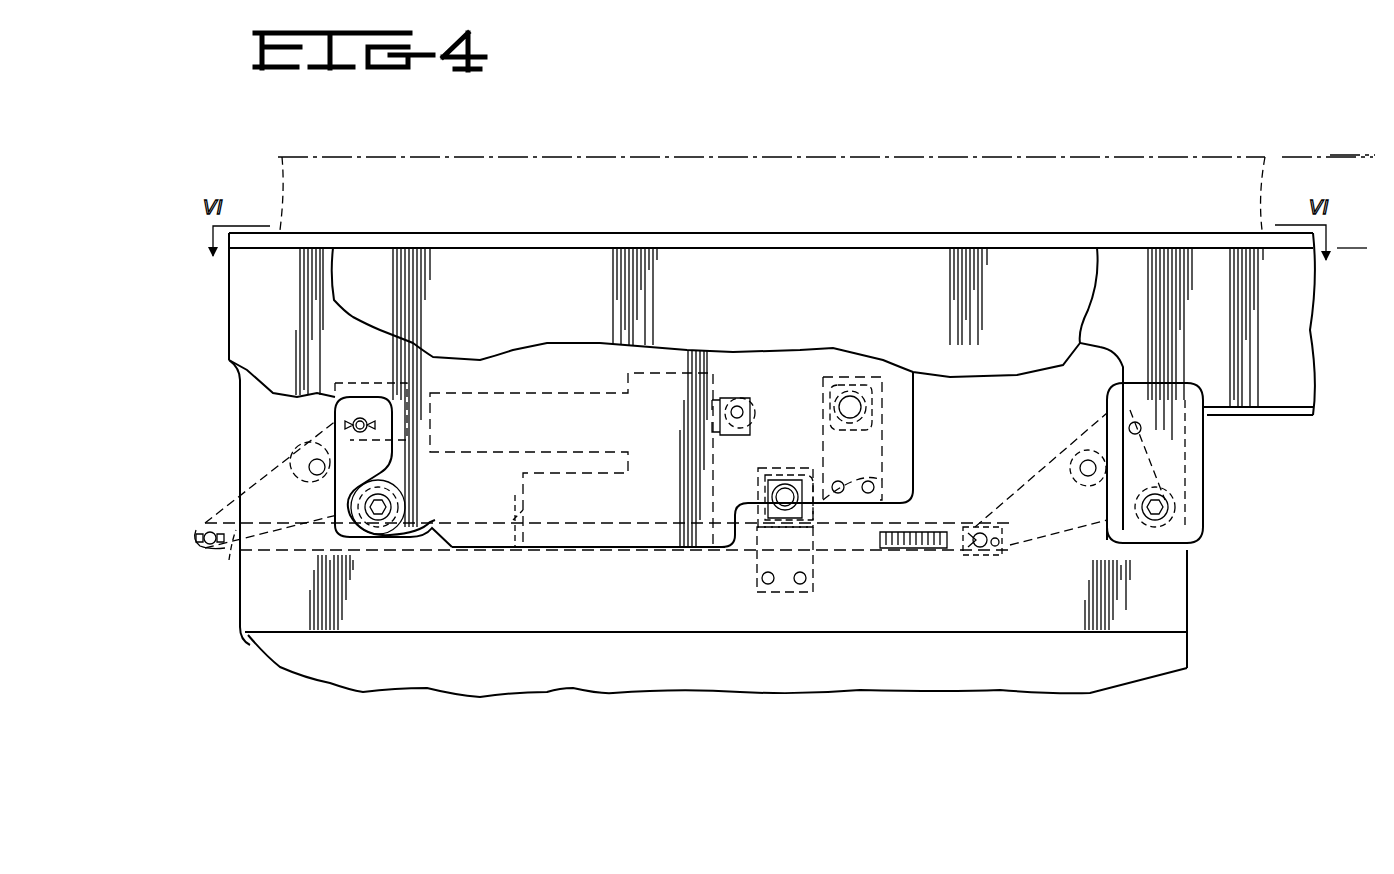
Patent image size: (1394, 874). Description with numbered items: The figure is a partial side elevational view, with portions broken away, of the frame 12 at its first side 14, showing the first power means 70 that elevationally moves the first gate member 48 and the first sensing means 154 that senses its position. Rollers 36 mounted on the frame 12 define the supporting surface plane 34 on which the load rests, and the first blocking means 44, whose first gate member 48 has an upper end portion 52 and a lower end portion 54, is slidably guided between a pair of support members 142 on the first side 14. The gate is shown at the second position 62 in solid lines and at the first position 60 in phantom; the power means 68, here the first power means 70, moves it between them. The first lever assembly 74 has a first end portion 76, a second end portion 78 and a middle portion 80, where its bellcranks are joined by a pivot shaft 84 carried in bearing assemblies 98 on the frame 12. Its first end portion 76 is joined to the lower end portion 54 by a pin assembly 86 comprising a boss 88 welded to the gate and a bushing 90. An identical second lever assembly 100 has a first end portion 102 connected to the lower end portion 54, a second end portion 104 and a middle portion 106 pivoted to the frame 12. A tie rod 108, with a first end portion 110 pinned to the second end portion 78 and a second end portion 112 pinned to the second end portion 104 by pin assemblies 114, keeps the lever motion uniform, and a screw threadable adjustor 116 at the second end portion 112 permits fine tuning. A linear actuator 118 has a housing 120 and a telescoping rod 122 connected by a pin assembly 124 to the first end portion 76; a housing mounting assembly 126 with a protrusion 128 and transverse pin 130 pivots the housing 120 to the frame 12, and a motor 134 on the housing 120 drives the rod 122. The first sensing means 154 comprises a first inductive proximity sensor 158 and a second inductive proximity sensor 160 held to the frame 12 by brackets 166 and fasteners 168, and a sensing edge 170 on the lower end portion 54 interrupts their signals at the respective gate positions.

The frame 12 is at (800, 250).
The first side 14 is at (483, 262).
The supporting surface plane 34 is at (900, 240).
The rollers 36 is at (411, 262).
The first blocking means 44 is at (1170, 245).
The first gate member 48 is at (285, 260).
The upper end portion 52 is at (1133, 258).
The lower end portion 54 is at (430, 530).
The first position 60 is at (1333, 152).
The second position 62 is at (1340, 248).
The power means 68 is at (652, 336).
The first power means 70 is at (678, 352).
The first lever assembly 74 is at (235, 480).
The first end portion 76 is at (415, 480).
The second end portion 78 is at (232, 560).
The middle portion 80 is at (292, 440).
The pivot shaft 84 is at (300, 462).
The pin assembly 86 is at (402, 508).
The boss 88 is at (413, 500).
The bushing 90 is at (380, 520).
The bearing assemblies 98 is at (312, 490).
The second lever assembly 100 is at (1088, 544).
The first end portion 102 is at (1140, 528).
The second end portion 104 is at (1010, 545).
The middle portion 106 is at (1052, 470).
The tie rod 108 is at (640, 553).
The first end portion 110 is at (222, 515).
The second end portion 112 is at (898, 556).
The pin assembly 114 is at (211, 546).
The screw threadable adjustor 116 is at (970, 555).
The linear actuator 118 is at (530, 388).
The housing 120 is at (558, 390).
The rod 122 is at (410, 412).
The pin assembly 124 is at (362, 418).
The housing mounting assembly 126 is at (742, 395).
The protrusion 128 is at (752, 408).
The pin 130 is at (750, 432).
The motor 134 is at (508, 548).
The support members 142 is at (548, 262).
The first sensing means 154 is at (890, 462).
The first inductive proximity sensor 158 is at (868, 407).
The second inductive proximity sensor 160 is at (797, 507).
The brackets 166 is at (895, 488).
The fasteners 168 is at (875, 482).
The sensing edge 170 is at (790, 518).